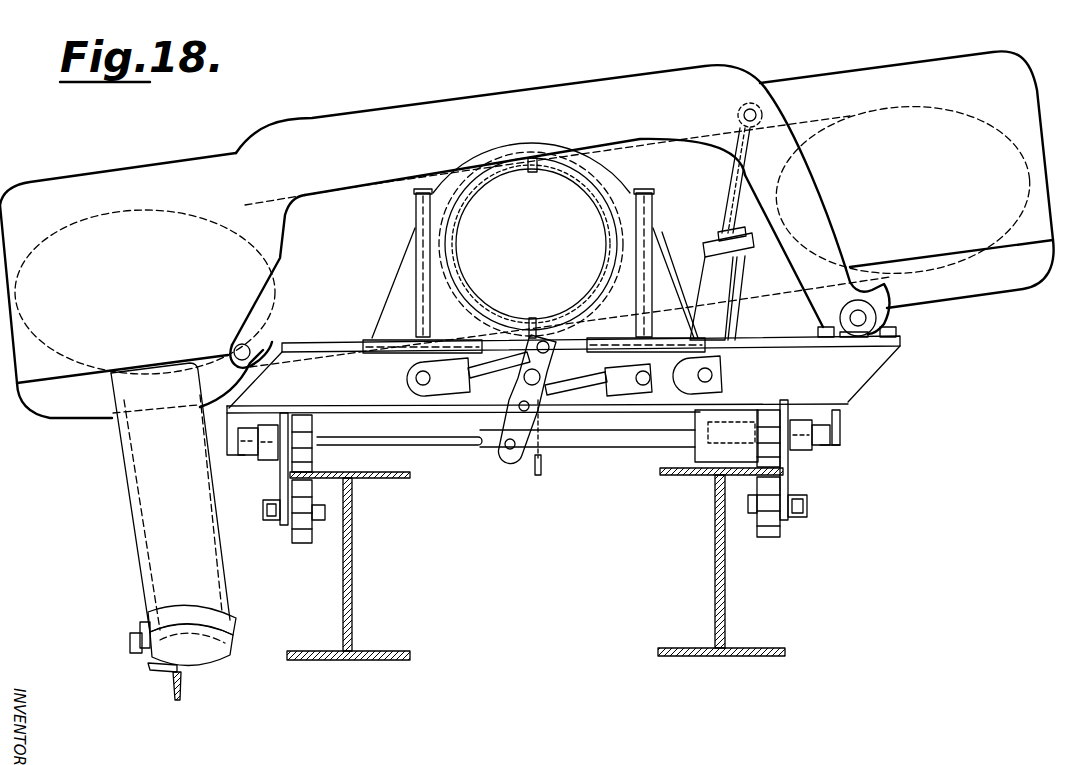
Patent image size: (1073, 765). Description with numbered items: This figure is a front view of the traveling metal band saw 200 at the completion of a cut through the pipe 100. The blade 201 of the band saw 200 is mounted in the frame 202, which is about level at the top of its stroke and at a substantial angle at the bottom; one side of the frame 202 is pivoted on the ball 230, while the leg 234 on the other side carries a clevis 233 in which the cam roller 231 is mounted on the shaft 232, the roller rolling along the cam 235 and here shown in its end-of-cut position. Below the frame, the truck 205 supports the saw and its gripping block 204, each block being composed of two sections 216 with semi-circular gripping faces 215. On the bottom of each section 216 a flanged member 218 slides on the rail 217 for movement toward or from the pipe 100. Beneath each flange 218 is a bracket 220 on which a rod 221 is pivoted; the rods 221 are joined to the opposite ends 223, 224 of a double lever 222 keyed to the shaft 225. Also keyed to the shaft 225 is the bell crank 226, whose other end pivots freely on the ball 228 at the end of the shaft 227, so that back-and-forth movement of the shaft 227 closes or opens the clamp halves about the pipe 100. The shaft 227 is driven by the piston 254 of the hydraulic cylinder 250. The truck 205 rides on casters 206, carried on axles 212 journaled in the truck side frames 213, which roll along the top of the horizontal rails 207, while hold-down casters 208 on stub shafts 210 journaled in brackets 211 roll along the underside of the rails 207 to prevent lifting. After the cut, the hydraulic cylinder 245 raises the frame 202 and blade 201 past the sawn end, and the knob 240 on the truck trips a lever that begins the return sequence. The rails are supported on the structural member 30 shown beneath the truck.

The I-beam rail 30 is at (352, 601).
The pipe 100 is at (500, 177).
The traveling metal band saw 200 is at (349, 104).
The blade 201 is at (826, 119).
The frame 202 is at (490, 103).
The gripping block 204 is at (612, 189).
The truck 205 is at (843, 419).
The casters 206 is at (308, 464).
The horizontal rails 207 is at (307, 480).
The hold-down casters 208 is at (302, 540).
The stub shafts 210 is at (320, 513).
The brackets 211 is at (275, 523).
The axles 212 is at (432, 444).
The truck side frames 213 is at (283, 462).
The semi-circular gripping faces 215 is at (480, 180).
The frame sections 216 is at (579, 140).
The rail 217 is at (348, 348).
The flanged member 218 is at (393, 338).
The bracket 220 is at (414, 376).
The rod 221 is at (490, 382).
The double lever 222 is at (548, 362).
The end of double lever 223 is at (545, 350).
The end of double lever 224 is at (522, 399).
The shaft 225 is at (542, 377).
The bell crank 226 is at (533, 417).
The shaft 227 is at (627, 438).
The ball 228 is at (504, 445).
The ball 230 is at (877, 319).
The cam roller 231 is at (203, 653).
The shaft 232 is at (131, 643).
The clevis 233 is at (145, 637).
The leg 234 is at (136, 573).
The cam 235 is at (145, 664).
The knob 240 is at (539, 472).
The hydraulic cylinder 245 is at (733, 273).
The hydraulic cylinder 250 is at (733, 416).
The piston 254 is at (700, 428).